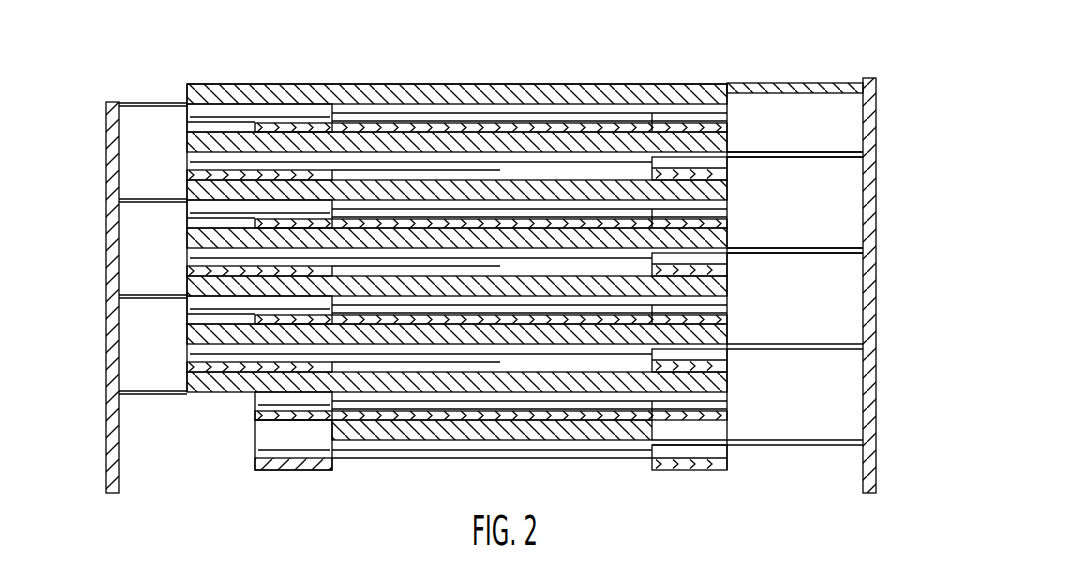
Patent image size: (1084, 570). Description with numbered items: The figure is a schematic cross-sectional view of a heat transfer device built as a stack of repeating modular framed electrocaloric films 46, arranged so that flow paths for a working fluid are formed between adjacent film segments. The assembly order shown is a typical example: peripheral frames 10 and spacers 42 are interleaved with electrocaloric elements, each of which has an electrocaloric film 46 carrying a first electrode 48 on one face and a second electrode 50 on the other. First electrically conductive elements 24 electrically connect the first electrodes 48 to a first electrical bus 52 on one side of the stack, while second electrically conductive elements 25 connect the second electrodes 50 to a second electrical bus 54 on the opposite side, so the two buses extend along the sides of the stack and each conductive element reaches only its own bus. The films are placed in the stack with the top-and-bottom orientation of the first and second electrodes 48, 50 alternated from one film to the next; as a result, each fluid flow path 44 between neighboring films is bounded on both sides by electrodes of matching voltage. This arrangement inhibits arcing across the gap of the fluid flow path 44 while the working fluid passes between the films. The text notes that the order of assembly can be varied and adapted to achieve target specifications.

The peripheral frame 10 is at (457, 242).
The first electrically conductive element 24 is at (243, 126).
The second electrically conductive element 25 is at (806, 156).
The spacer 42 is at (187, 173).
The fluid flow path 44 is at (420, 122).
The electrocaloric film 46 is at (697, 92).
The first electrode 48 is at (497, 80).
The second electrode 50 is at (523, 98).
The first electrical bus 52 is at (107, 258).
The second electrical bus 54 is at (872, 310).